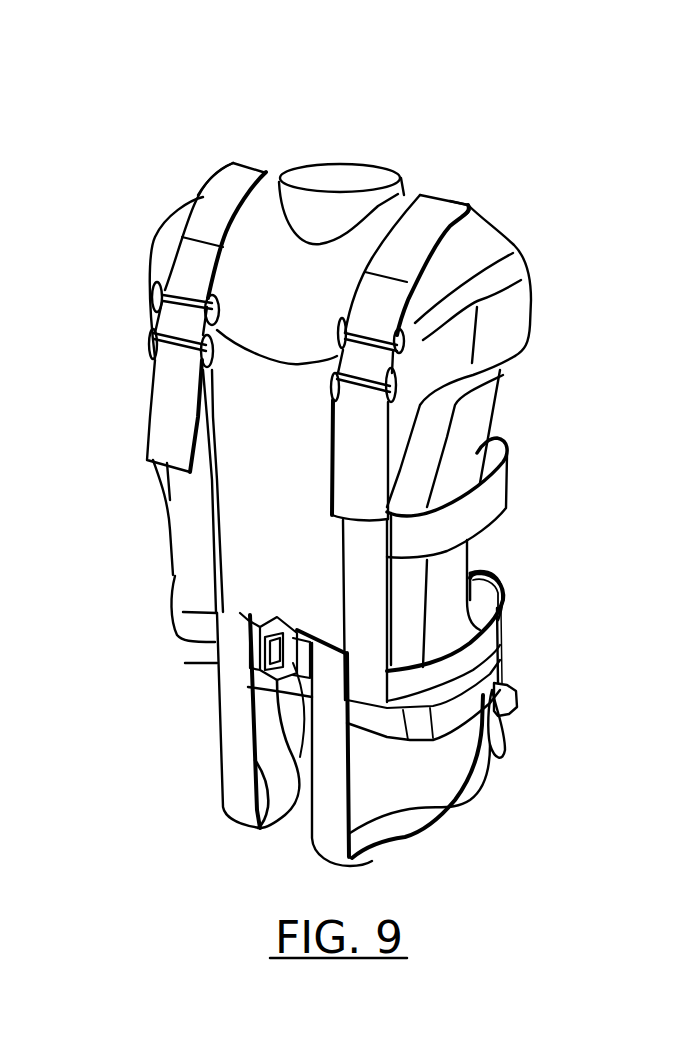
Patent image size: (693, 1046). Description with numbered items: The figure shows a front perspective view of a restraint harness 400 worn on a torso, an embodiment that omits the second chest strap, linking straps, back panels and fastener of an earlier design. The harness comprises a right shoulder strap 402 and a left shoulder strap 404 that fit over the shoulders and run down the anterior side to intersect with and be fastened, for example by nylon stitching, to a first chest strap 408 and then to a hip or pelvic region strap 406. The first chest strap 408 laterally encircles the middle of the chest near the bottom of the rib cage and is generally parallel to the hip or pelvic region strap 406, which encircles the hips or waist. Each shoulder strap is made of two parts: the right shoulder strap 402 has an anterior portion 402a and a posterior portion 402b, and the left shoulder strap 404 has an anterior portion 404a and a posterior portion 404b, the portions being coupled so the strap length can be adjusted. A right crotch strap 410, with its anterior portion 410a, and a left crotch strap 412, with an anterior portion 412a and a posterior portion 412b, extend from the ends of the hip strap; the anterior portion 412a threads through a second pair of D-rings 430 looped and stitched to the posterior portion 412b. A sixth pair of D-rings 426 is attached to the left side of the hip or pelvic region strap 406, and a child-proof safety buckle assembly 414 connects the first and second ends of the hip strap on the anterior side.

The restraint harness 400 is at (293, 72).
The right shoulder strap 402 is at (277, 182).
The anterior portion of right shoulder strap 402a is at (207, 467).
The posterior portion of right shoulder strap 402b is at (210, 183).
The left shoulder strap 404 is at (433, 194).
The anterior portion of left shoulder strap 404a is at (340, 553).
The posterior portion of left shoulder strap 404b is at (469, 221).
The hip or pelvic region strap 406 is at (172, 603).
The first chest strap 408 is at (508, 478).
The right crotch strap 410 is at (218, 733).
The anterior portion of right crotch strap 410a is at (220, 798).
The left crotch strap 412 is at (350, 805).
The anterior portion of left crotch strap 412a is at (440, 833).
The posterior portion of left crotch strap 412b is at (503, 657).
The child-proof safety buckle assembly 414 is at (275, 622).
The sixth pair of D-rings 426 is at (500, 590).
The second pair of D-rings 430 is at (518, 712).